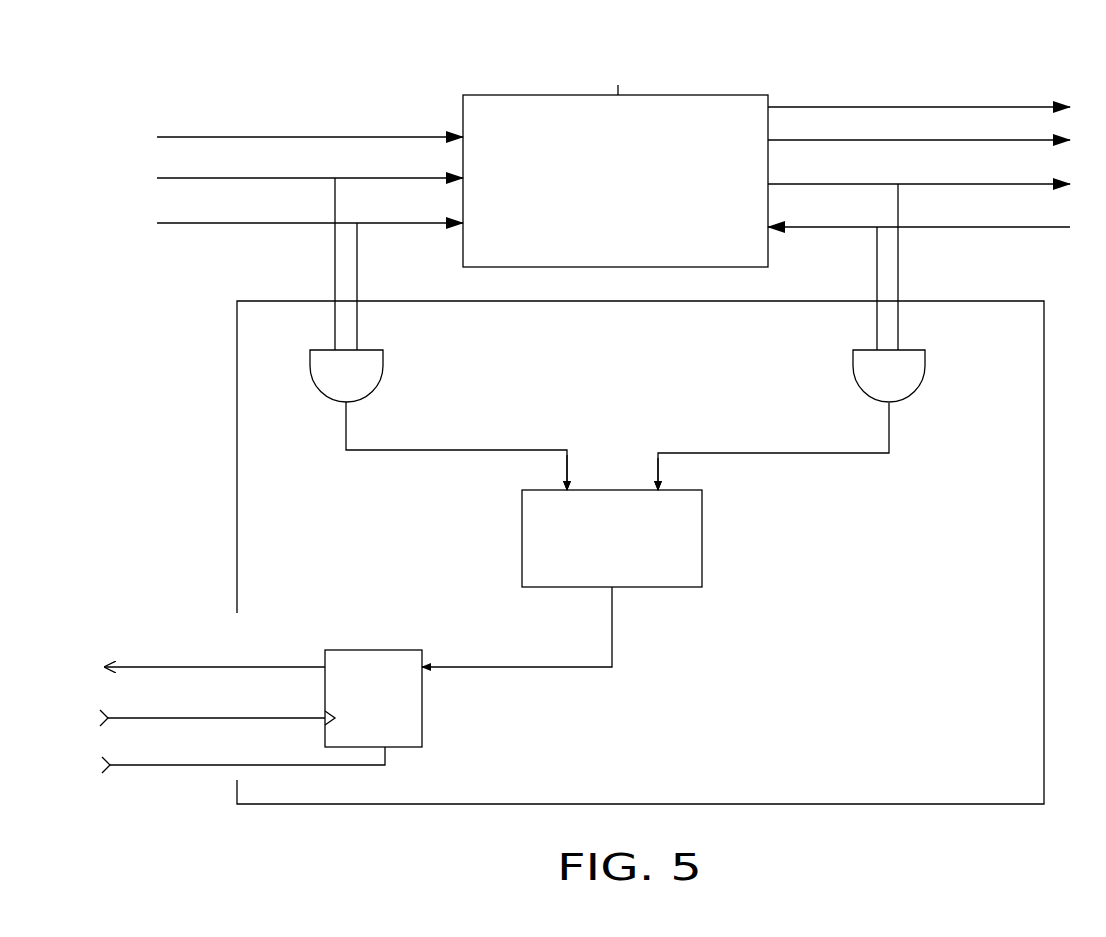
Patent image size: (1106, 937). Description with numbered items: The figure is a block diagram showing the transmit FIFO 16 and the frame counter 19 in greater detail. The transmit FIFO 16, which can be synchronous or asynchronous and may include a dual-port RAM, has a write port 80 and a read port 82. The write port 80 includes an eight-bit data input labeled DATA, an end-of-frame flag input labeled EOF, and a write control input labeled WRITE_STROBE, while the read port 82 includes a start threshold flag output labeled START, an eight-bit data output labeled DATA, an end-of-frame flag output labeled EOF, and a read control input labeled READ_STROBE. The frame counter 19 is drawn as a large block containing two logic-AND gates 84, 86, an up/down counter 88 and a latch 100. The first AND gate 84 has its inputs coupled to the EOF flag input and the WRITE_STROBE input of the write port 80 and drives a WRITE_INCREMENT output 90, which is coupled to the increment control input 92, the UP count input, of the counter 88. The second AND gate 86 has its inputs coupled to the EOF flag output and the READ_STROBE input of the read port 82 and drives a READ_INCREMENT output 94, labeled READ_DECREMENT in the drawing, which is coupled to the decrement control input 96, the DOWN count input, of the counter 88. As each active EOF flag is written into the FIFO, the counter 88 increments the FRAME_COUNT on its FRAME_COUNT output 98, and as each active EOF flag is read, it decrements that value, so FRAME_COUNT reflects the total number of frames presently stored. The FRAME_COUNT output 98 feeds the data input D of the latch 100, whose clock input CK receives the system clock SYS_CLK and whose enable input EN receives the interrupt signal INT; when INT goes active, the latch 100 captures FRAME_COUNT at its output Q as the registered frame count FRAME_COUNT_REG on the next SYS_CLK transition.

The transmit FIFO 16 is at (690, 95).
The write port 80 is at (415, 108).
The read port 82 is at (795, 92).
The frame counter 19 is at (237, 410).
The logic-AND gate 84 is at (383, 372).
The logic-AND gate 86 is at (925, 368).
The WRITE_INCREMENT output 90 is at (345, 412).
The increment control input 92 is at (567, 460).
The READ_INCREMENT output 94 is at (890, 412).
The decrement control input 96 is at (660, 460).
The up/down counter 88 is at (702, 540).
The FRAME_COUNT output 98 is at (612, 605).
The latch 100 is at (382, 648).